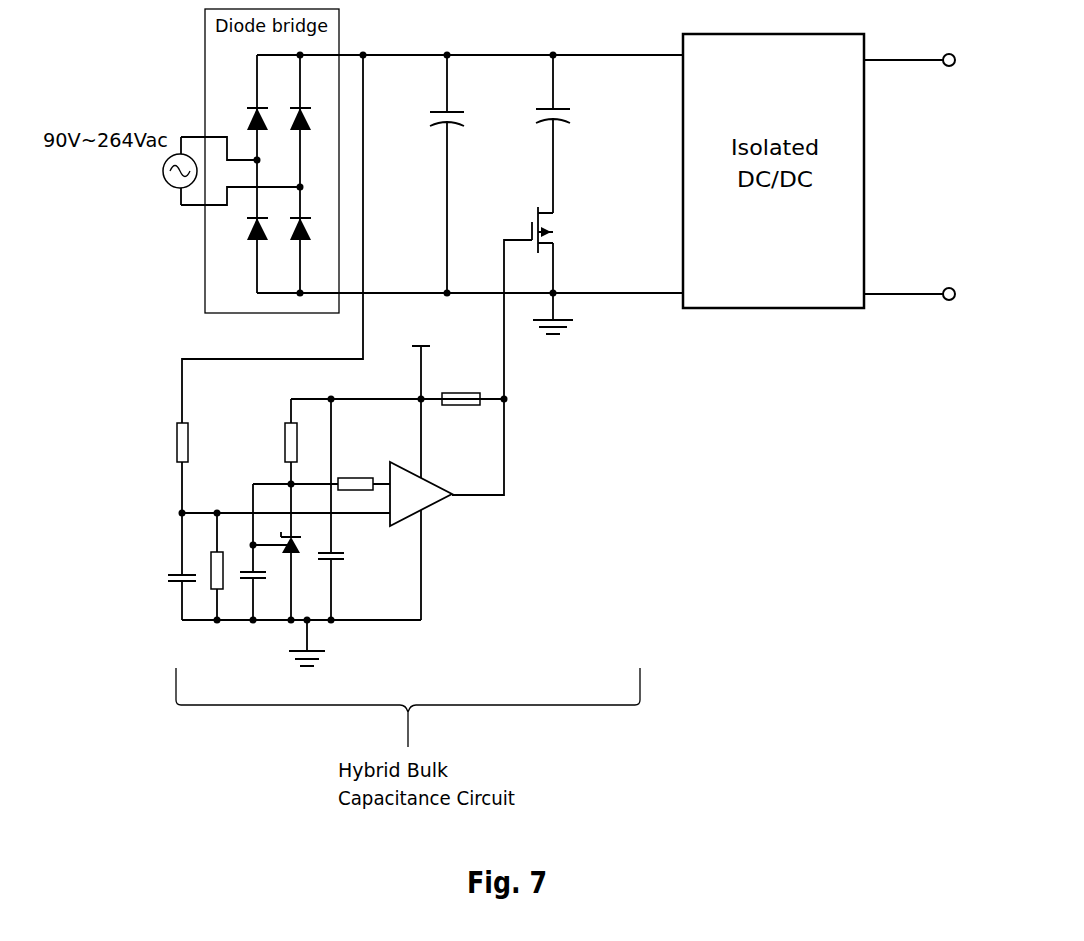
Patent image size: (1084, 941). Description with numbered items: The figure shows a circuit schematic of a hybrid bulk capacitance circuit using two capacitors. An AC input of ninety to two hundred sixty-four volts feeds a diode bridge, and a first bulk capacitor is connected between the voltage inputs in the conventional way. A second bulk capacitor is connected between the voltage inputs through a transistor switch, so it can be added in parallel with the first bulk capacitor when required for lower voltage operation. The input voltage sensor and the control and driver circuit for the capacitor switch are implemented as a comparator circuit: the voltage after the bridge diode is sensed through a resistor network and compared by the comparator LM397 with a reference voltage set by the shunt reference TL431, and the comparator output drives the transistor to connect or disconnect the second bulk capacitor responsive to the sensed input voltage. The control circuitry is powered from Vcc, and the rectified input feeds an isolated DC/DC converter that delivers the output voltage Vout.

The reference voltage device TL431 is at (296, 541).
The comparator LM397 is at (444, 498).
The supply voltage Vcc is at (422, 467).
The output voltage Vout is at (913, 177).